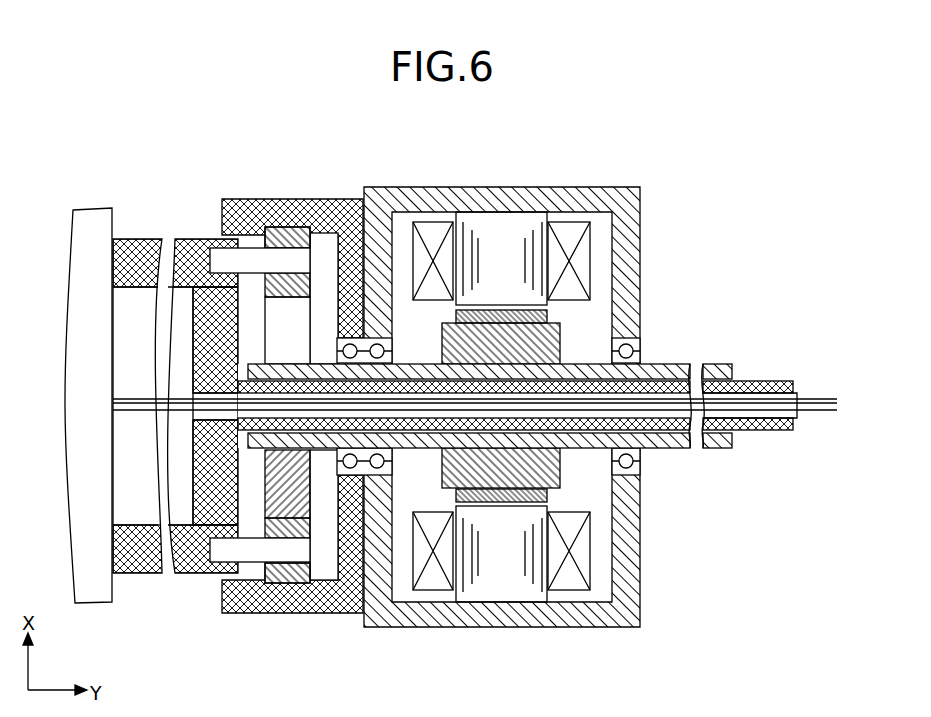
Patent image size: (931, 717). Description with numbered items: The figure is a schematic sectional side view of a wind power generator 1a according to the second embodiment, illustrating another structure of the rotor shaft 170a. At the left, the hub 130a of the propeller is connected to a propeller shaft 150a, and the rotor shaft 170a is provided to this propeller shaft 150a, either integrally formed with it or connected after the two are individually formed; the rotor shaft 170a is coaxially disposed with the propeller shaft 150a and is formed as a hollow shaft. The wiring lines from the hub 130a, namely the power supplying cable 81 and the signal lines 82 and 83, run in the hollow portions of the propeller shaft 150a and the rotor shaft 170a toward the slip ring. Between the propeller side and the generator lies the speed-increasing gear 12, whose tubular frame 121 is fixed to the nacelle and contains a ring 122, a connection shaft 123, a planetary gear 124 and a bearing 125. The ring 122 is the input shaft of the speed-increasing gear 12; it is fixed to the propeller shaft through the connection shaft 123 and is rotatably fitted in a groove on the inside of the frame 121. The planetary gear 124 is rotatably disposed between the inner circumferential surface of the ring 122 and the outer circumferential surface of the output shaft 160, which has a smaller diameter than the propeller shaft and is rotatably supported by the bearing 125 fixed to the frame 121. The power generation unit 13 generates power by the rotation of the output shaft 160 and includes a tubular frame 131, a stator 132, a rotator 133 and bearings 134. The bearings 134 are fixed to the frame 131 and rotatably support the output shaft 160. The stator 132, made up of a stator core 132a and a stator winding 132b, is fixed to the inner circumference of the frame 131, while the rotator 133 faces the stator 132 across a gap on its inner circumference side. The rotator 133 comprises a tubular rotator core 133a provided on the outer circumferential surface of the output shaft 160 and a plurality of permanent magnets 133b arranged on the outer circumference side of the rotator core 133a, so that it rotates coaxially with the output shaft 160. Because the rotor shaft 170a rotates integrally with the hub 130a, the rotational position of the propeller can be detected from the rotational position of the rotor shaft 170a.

The wind power generator 1a is at (790, 130).
The speed-increasing gear 12 is at (322, 160).
The power generation unit 13 is at (648, 160).
The power supplying cable 81 is at (798, 388).
The signal line 82 is at (830, 400).
The signal line 83 is at (812, 418).
The frame 121 is at (285, 199).
The ring 122 is at (320, 228).
The connection shaft 123 is at (222, 250).
The planetary gear 124 is at (277, 505).
The bearing 125 is at (352, 470).
The hub 130a is at (95, 209).
The frame 131 is at (640, 233).
The stator 132 is at (530, 150).
The stator core 132a is at (502, 212).
The stator winding 132b is at (433, 222).
The rotator 133 is at (722, 480).
The rotator core 133a is at (560, 470).
The permanent magnets 133b is at (548, 497).
The bearings 134 is at (647, 340).
The propeller shaft 150a is at (140, 237).
The output shaft 160 is at (718, 448).
The rotor shaft 170a is at (748, 380).